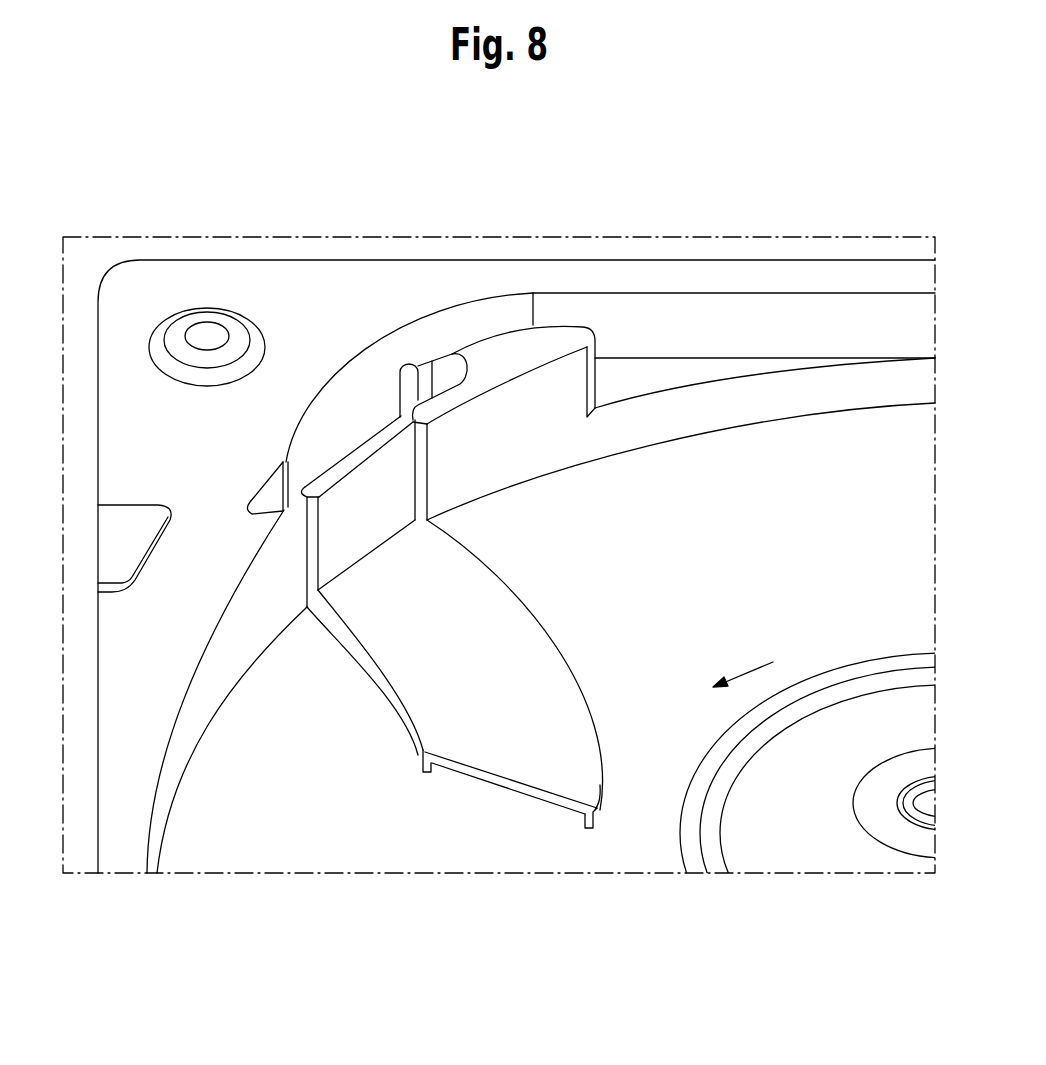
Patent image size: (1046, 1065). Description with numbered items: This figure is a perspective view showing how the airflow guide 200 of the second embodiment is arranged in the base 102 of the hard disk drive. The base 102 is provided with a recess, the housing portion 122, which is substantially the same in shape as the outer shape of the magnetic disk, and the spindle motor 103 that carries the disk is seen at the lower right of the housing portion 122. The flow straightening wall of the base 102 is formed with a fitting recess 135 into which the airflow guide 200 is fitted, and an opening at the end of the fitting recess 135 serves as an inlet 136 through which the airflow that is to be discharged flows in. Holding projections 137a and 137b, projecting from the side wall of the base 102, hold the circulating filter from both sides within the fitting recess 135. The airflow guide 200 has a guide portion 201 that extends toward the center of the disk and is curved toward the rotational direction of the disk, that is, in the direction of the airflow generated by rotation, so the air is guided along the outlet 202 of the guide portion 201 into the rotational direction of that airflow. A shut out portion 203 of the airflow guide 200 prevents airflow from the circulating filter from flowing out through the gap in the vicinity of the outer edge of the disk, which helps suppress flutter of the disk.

The base 102 is at (675, 270).
The spindle motor 103 is at (843, 712).
The housing portion 122 is at (380, 860).
The fitting recess 135 is at (346, 376).
The inlet 136 is at (600, 376).
The holding projection 137a is at (280, 505).
The holding projection 137b is at (413, 367).
The airflow guide 200 is at (527, 551).
The guide portion 201 is at (585, 672).
The outlet 202 is at (433, 763).
The shut out portion 203 is at (352, 456).